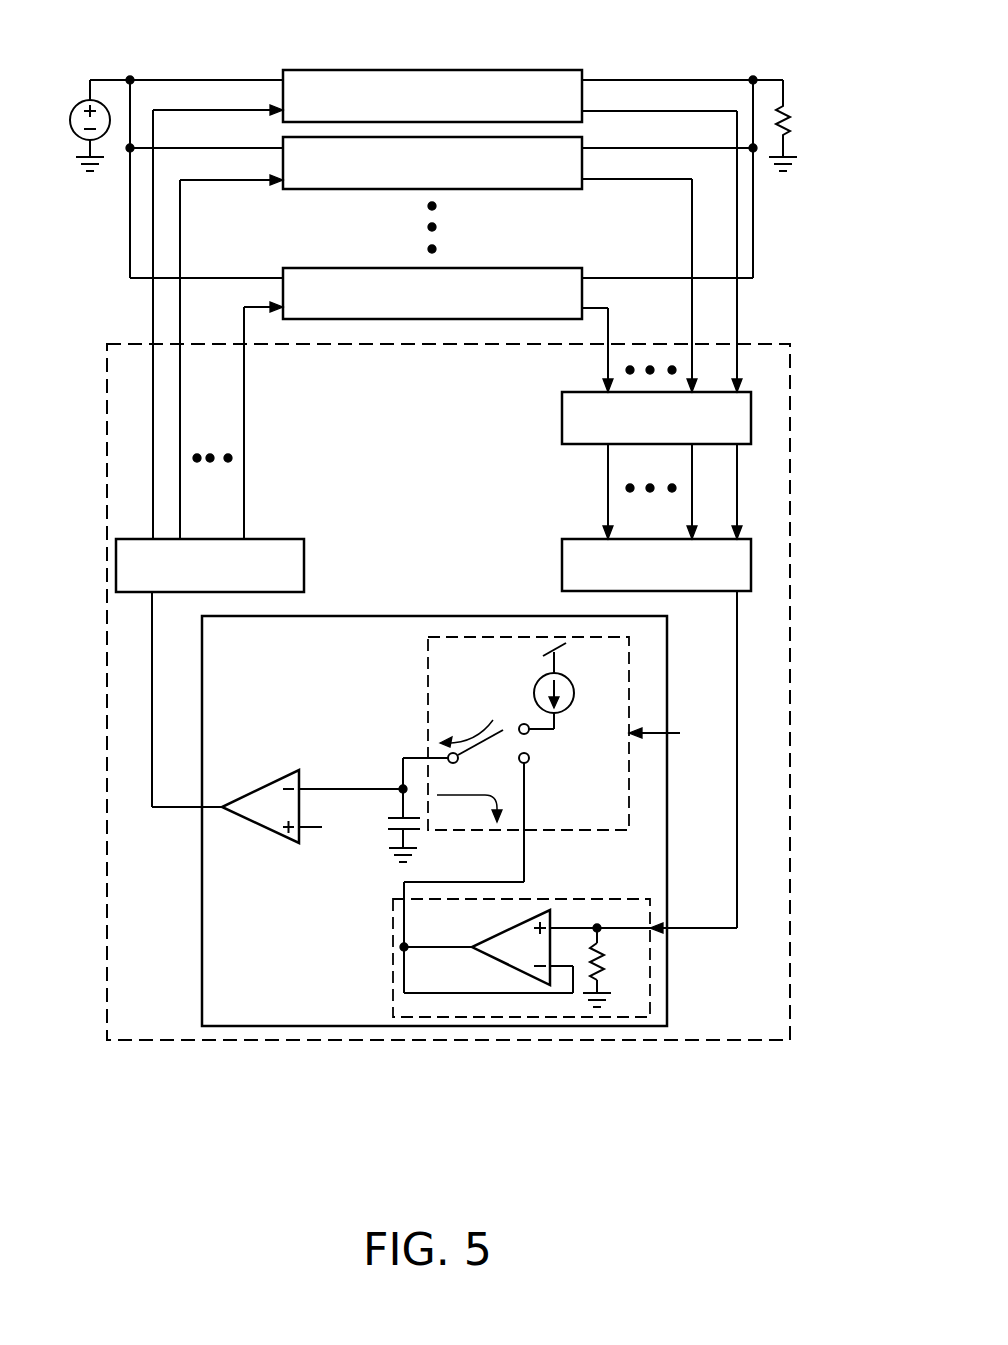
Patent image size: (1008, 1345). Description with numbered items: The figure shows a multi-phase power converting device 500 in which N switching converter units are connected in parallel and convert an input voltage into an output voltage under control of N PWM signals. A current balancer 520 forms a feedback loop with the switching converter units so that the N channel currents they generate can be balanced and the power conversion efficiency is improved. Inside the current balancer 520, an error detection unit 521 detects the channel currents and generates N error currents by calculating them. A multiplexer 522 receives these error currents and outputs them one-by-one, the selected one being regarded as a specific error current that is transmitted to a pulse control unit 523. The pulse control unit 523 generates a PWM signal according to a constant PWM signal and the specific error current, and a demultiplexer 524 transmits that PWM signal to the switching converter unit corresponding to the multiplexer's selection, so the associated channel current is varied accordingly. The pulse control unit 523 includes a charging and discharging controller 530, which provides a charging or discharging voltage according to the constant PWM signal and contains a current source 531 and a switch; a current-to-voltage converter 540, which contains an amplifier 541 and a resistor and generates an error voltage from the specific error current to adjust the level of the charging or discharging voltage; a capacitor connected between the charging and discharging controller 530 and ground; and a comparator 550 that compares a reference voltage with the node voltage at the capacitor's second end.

The multi-phase power converting device 500 is at (803, 1132).
The current balancer 520 is at (790, 575).
The error detection unit 521 is at (562, 420).
The multiplexer 522 is at (562, 567).
The pulse control unit 523 is at (202, 973).
The demultiplexer 524 is at (304, 566).
The charging and discharging controller 530 is at (428, 700).
The current source 531 is at (575, 693).
The current-to-voltage converter 540 is at (393, 975).
The amplifier 541 is at (510, 966).
The comparator 550 is at (257, 787).